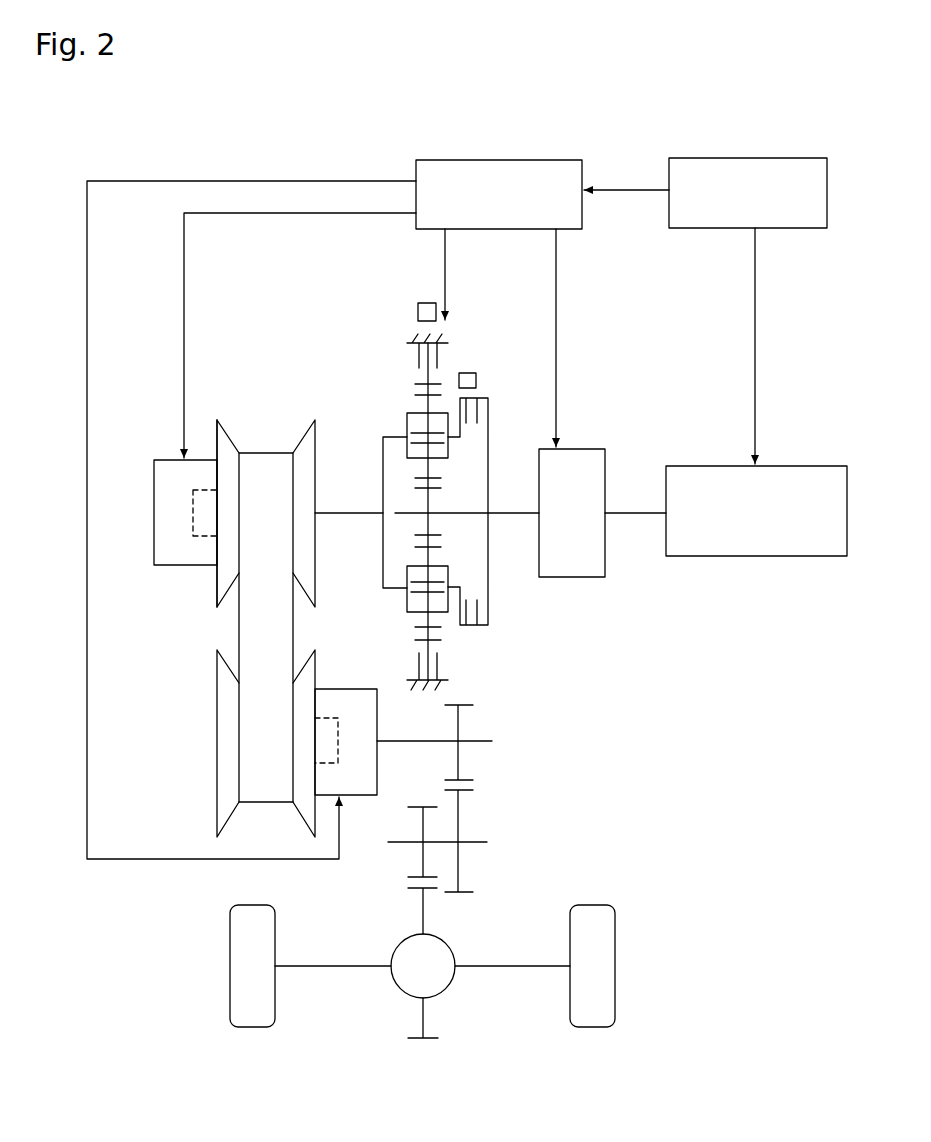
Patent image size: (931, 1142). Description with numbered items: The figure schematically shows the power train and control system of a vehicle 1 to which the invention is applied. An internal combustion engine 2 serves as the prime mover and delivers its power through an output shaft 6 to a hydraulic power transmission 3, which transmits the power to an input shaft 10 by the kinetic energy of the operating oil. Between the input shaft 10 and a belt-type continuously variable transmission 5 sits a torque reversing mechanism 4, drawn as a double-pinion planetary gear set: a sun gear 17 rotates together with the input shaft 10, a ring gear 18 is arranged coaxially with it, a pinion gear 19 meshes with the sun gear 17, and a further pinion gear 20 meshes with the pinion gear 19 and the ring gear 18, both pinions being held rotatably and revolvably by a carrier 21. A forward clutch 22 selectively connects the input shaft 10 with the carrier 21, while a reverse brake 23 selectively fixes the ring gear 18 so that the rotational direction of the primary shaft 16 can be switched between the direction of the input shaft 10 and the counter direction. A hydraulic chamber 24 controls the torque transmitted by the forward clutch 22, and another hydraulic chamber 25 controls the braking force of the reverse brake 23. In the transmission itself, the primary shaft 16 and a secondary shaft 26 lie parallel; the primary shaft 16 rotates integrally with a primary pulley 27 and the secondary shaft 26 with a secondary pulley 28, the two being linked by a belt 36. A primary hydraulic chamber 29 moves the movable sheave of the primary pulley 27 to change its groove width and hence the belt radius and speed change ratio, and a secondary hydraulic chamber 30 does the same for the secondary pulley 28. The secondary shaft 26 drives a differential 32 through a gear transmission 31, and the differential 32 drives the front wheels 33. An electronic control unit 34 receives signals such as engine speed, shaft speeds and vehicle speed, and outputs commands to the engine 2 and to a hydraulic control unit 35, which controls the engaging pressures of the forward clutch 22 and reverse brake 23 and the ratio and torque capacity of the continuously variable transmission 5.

The vehicle 1 is at (672, 709).
The internal combustion engine 2 is at (800, 463).
The hydraulic power transmission 3 is at (587, 586).
The torque reversing mechanism 4 is at (390, 362).
The belt-type continuously variable transmission 5 is at (239, 440).
The output shaft 6 is at (645, 514).
The input shaft 10 is at (446, 511).
The primary shaft 16 is at (348, 514).
The sun gear 17 is at (432, 520).
The ring gear 18 is at (418, 640).
The pinion gear 19 is at (433, 462).
The pinion gear 20 is at (424, 398).
The carrier 21 is at (407, 430).
The forward clutch 22 is at (475, 632).
The reverse brake 23 is at (412, 356).
The hydraulic chamber 24 is at (468, 372).
The hydraulic chamber 25 is at (424, 302).
The secondary shaft 26 is at (429, 741).
The primary pulley 27 is at (213, 578).
The secondary pulley 28 is at (230, 742).
The primary hydraulic chamber 29 is at (193, 502).
The secondary hydraulic chamber 30 is at (338, 744).
The gear transmission 31 is at (492, 814).
The differential 32 is at (445, 980).
The wheels 33 is at (605, 946).
The electronic control unit 34 is at (756, 156).
The hydraulic control unit 35 is at (497, 158).
The belt 36 is at (235, 620).